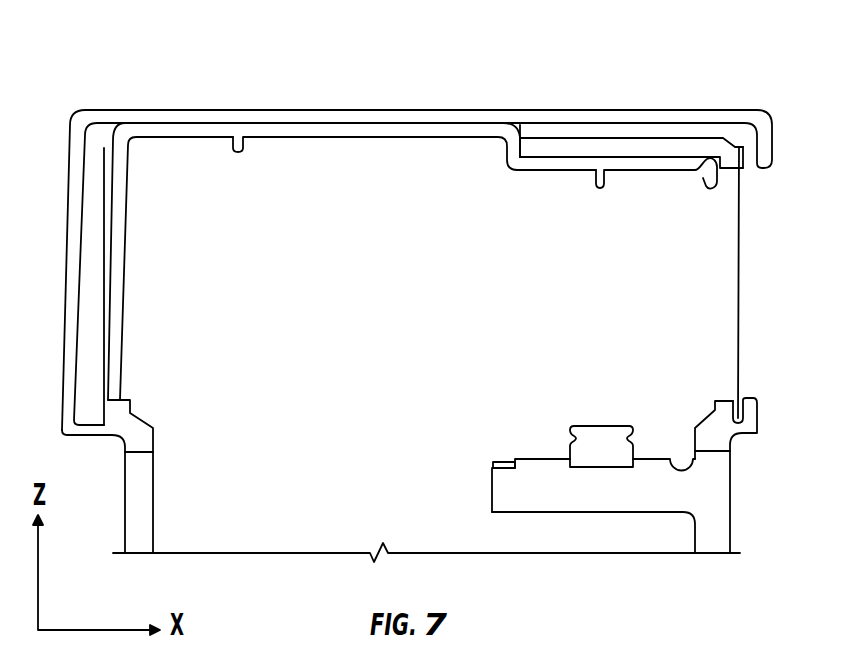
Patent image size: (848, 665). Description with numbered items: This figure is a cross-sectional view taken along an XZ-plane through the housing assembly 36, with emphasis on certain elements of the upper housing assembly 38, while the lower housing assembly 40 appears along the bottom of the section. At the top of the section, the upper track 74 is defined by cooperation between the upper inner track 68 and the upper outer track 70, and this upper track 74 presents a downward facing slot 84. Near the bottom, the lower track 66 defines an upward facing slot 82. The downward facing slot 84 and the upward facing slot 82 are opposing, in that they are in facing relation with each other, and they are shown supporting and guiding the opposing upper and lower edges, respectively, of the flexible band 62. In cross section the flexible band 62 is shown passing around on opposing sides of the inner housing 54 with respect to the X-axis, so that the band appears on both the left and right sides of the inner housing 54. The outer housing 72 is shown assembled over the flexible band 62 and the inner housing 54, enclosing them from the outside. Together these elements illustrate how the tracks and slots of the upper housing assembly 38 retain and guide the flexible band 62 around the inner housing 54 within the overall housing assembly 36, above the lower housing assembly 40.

The housing assembly 36 is at (347, 58).
The upper housing assembly 38 is at (288, 274).
The lower housing assembly 40 is at (140, 498).
The inner housing 54 is at (290, 130).
The flexible band 62 is at (100, 263).
The lower track 66 is at (130, 433).
The upper inner track 68 is at (597, 152).
The upper outer track 70 is at (723, 128).
The outer housing 72 is at (142, 118).
The upper track 74 is at (632, 138).
The upward facing slot 82 is at (742, 400).
The downward facing slot 84 is at (742, 155).